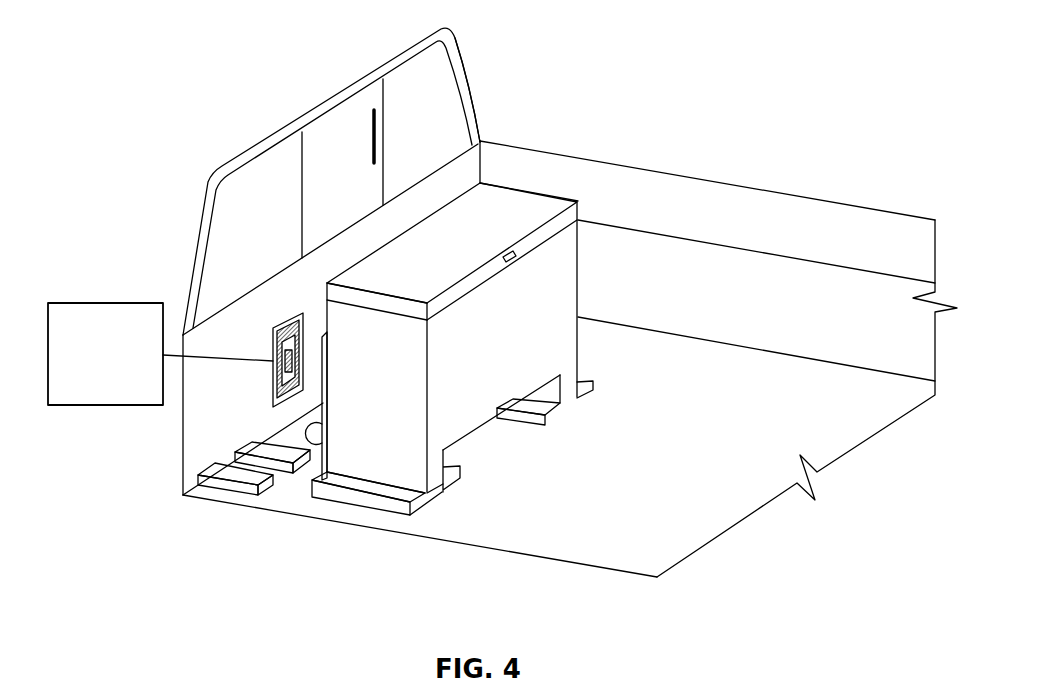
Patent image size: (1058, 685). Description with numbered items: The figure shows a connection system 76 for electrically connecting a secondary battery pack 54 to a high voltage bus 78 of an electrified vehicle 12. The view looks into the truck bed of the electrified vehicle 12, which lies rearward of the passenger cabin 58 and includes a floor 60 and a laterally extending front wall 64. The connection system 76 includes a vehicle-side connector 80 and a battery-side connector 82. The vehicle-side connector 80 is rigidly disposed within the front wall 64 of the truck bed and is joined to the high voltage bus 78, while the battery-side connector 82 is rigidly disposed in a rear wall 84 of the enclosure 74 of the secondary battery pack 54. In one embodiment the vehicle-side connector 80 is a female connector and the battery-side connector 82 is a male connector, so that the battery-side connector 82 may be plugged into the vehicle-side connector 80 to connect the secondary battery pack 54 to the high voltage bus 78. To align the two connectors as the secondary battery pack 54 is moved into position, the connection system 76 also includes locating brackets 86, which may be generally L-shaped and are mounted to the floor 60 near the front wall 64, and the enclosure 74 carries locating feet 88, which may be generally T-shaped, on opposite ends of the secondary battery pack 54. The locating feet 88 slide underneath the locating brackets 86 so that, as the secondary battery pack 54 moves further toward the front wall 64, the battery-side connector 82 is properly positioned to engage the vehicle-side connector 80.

The electrified vehicle 12 is at (366, 171).
The passenger cabin 58 is at (463, 114).
The connection system 76 is at (310, 291).
The front wall 64 is at (205, 410).
The floor 60 is at (295, 493).
The high voltage bus 78 is at (73, 302).
The vehicle-side connector 80 is at (278, 327).
The battery-side connector 82 is at (337, 357).
The rear wall 84 is at (328, 445).
The locating brackets 86 is at (263, 448).
The secondary battery pack 54 is at (562, 281).
The enclosure 74 is at (483, 410).
The locating feet 88 is at (580, 408).